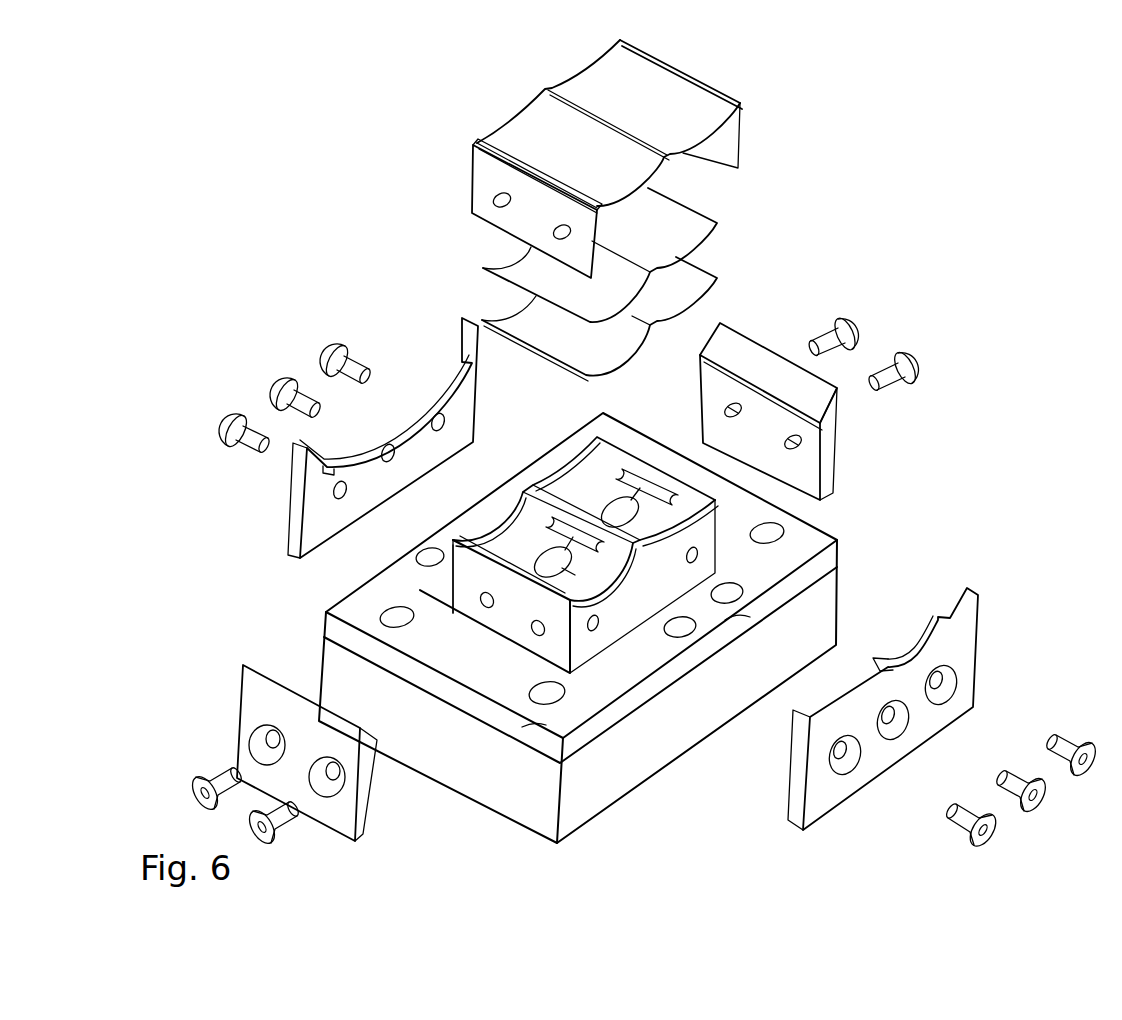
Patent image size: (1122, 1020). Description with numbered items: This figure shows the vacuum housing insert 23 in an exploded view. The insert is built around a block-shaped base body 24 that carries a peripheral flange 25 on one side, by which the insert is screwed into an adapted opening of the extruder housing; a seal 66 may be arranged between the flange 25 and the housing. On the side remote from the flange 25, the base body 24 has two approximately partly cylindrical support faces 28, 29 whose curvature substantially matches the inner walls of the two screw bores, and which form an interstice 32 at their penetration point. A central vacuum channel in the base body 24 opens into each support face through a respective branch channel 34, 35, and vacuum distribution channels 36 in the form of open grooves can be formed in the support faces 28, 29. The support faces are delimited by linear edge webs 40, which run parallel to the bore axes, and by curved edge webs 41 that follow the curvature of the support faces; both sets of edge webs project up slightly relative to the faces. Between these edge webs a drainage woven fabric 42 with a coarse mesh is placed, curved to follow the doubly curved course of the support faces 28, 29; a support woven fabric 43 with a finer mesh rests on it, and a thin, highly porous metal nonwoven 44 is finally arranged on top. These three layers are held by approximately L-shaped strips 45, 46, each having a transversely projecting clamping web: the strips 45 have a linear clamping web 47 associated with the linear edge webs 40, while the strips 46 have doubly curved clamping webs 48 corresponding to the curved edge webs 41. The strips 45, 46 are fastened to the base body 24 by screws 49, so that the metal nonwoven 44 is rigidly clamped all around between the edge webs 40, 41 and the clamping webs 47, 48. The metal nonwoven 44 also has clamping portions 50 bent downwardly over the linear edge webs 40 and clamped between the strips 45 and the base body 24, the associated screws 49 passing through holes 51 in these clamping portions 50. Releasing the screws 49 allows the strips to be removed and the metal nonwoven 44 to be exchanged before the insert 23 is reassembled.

The vacuum housing insert 23 is at (684, 787).
The block-shaped base body 24 is at (516, 628).
The peripheral flange 25 is at (825, 608).
The support face 28 is at (580, 582).
The support face 29 is at (583, 490).
The interstice 32 is at (637, 543).
The branch channel 34 is at (568, 558).
The branch channel 35 is at (660, 462).
The vacuum distribution channels 36 is at (560, 530).
The linear edge webs 40 is at (452, 585).
The curved edge webs 41 is at (610, 587).
The drainage woven fabric 42 is at (697, 275).
The support woven fabric 43 is at (693, 216).
The metal nonwoven 44 is at (755, 128).
The strips 45 is at (813, 463).
The strips 46 is at (290, 540).
The linear clamping web 47 is at (767, 380).
The doubly curved clamping web 48 is at (363, 447).
The screws 49 is at (287, 383).
The clamping portions 50 is at (480, 178).
The holes 51 is at (494, 200).
The seal 66 is at (562, 568).